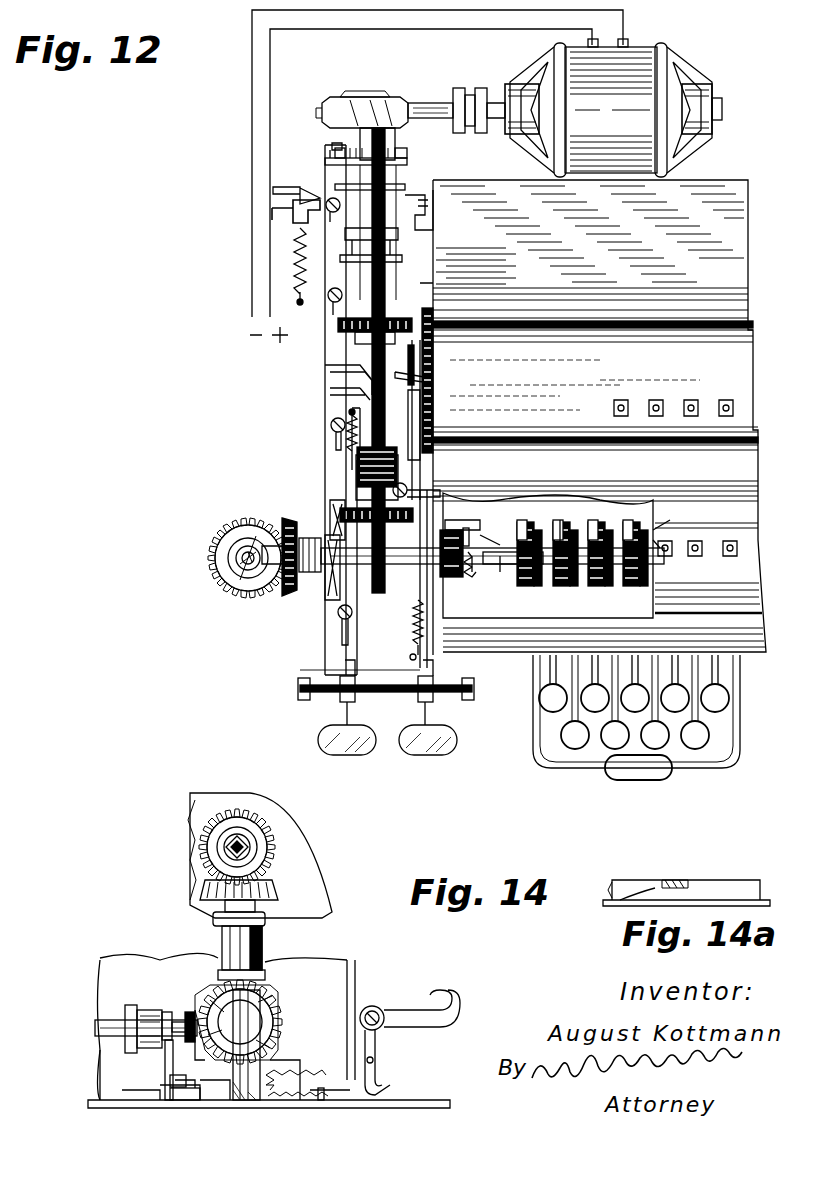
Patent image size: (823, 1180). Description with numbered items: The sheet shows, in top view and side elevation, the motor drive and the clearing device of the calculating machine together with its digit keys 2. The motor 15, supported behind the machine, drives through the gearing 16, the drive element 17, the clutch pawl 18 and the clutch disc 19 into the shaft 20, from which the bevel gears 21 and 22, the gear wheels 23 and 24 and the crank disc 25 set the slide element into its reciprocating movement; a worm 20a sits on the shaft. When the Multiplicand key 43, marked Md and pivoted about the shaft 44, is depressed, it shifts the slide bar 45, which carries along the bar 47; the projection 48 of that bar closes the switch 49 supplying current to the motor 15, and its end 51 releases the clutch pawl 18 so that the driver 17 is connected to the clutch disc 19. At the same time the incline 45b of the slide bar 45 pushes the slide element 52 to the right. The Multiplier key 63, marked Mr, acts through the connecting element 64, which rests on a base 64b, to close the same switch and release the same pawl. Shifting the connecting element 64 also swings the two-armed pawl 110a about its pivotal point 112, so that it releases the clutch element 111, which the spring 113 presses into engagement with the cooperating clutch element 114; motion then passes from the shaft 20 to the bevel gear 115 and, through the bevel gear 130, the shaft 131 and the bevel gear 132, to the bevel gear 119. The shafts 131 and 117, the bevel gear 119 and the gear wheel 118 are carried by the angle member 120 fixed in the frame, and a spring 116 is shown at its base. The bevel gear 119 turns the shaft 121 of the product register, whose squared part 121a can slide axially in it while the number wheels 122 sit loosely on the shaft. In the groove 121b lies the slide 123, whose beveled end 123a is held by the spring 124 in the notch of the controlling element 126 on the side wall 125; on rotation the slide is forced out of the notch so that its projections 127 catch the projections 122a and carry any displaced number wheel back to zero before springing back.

In FIG. 12, the digit keys 2 is at (695, 748).
In FIG. 12, the motor 15 is at (620, 76).
In FIG. 12, the gearing 16 is at (338, 112).
In FIG. 12, the drive element 17 is at (399, 128).
In FIG. 12, the clutch pawl 18 is at (331, 149).
In FIG. 12, the clutch disc 19 is at (410, 158).
In FIG. 12, the shaft 20 is at (347, 240).
In FIG. 14, the shaft 20 is at (118, 1030).
In FIG. 12, the worm on drive shaft 20a is at (367, 498).
In FIG. 12, the bevel gear 21 is at (337, 322).
In FIG. 12, the bevel gear 22 is at (497, 318).
In FIG. 12, the gear wheel 23 is at (434, 354).
In FIG. 12, the gear wheel 24 is at (436, 418).
In FIG. 12, the crank disc 25 is at (436, 398).
In FIG. 12, the Multiplicand key 43 is at (320, 738).
In FIG. 12, the shaft 44 is at (298, 690).
In FIG. 12, the slide bar 45 is at (393, 360).
In FIG. 12, the incline 45b is at (420, 378).
In FIG. 12, the bar 47 is at (330, 237).
In FIG. 12, the projection 48 is at (302, 213).
In FIG. 12, the switch 49 is at (300, 200).
In FIG. 12, the end 51 is at (333, 153).
In FIG. 12, the slide element 52 is at (434, 372).
In FIG. 12, the Multiplier key 63 is at (447, 736).
In FIG. 14, the Multiplier key 63 is at (407, 1018).
In FIG. 12, the connecting element 64 is at (420, 285).
In FIG. 14, the connecting element 64 is at (140, 1095).
In FIG. 14A, the connecting element 64 is at (740, 883).
In FIG. 12, the frame plate base 64b is at (420, 670).
In FIG. 14A, the frame plate base 64b is at (667, 884).
In FIG. 12, the pawl 110a is at (455, 493).
In FIG. 14, the pawl 110a is at (167, 1066).
In FIG. 14A, the pawl 110a is at (677, 879).
In FIG. 12, the clutch element 111 is at (366, 458).
In FIG. 14, the clutch element 111 is at (154, 1011).
In FIG. 12, the pivotal point 112 is at (366, 494).
In FIG. 14, the pivotal point 112 is at (180, 1085).
In FIG. 12, the spring 113 is at (366, 461).
In FIG. 14, the spring 113 is at (140, 1018).
In FIG. 12, the cooperating clutch element 114 is at (353, 513).
In FIG. 14, the cooperating clutch element 114 is at (188, 1015).
In FIG. 12, the bevel gear 115 is at (330, 503).
In FIG. 14, the bevel gear 115 is at (202, 1055).
In FIG. 14, the spring 116 is at (275, 977).
In FIG. 14, the shaft 117 is at (262, 938).
In FIG. 12, the gear wheel 118 is at (214, 550).
In FIG. 14, the gear wheel 118 is at (272, 882).
In FIG. 12, the bevel gear 119 is at (284, 522).
In FIG. 14, the bevel gear 119 is at (262, 820).
In FIG. 12, the angle member 120 is at (303, 580).
In FIG. 14, the angle member 120 is at (226, 943).
In FIG. 12, the shaft 121 is at (470, 545).
In FIG. 12, the squared part 121a is at (386, 566).
In FIG. 14, the squared part 121a is at (200, 836).
In FIG. 12, the groove 121b is at (552, 512).
In FIG. 12, the number wheels 122 is at (530, 598).
In FIG. 12, the projections 122a is at (583, 562).
In FIG. 12, the slide 123 is at (478, 570).
In FIG. 12, the beveled end 123a is at (495, 545).
In FIG. 12, the spring 124 is at (508, 578).
In FIG. 12, the side wall 125 is at (313, 583).
In FIG. 12, the controlling element 126 is at (443, 600).
In FIG. 12, the projections 127 is at (537, 568).
In FIG. 12, the bevel gear 130 is at (352, 531).
In FIG. 14, the bevel gear 130 is at (275, 1001).
In FIG. 14, the shaft 131 is at (280, 1048).
In FIG. 12, the bevel gear 132 is at (288, 594).
In FIG. 14, the bevel gear 132 is at (280, 1023).